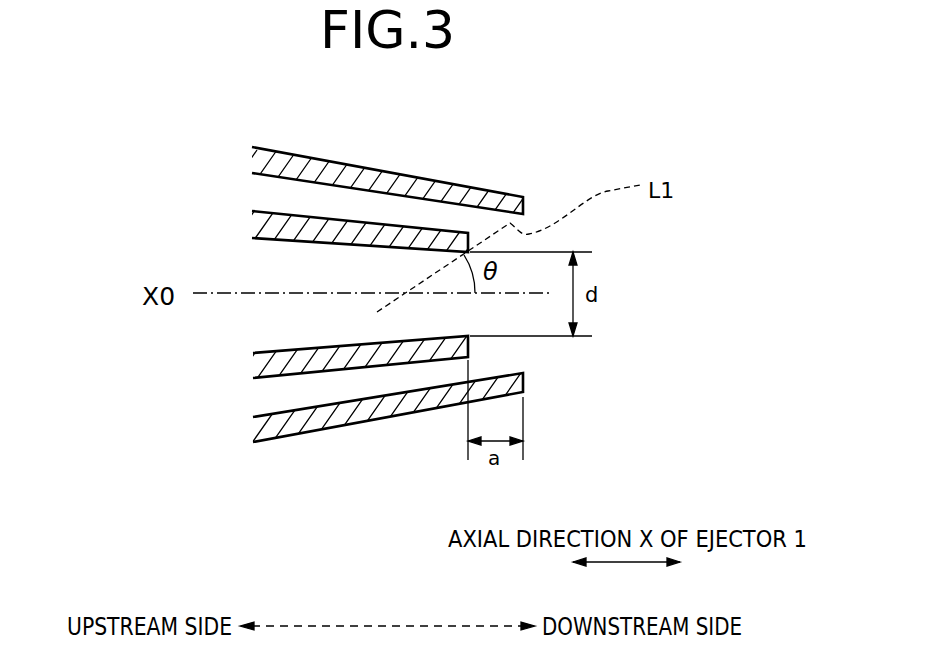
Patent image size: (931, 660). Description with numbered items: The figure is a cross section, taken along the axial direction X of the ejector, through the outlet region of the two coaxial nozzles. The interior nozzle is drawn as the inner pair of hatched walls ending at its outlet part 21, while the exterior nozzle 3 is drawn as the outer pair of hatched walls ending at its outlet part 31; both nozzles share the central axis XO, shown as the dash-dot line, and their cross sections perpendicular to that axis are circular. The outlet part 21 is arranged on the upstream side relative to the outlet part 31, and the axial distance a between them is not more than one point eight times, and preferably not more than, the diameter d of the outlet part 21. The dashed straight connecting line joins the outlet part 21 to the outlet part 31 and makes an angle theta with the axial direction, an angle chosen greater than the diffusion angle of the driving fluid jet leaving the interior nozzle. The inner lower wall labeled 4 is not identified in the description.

The exterior nozzle 3 is at (314, 421).
The nozzle 4 is at (268, 367).
The outlet part of the interior nozzle 21 is at (470, 242).
The outlet part of the exterior nozzle 31 is at (526, 212).